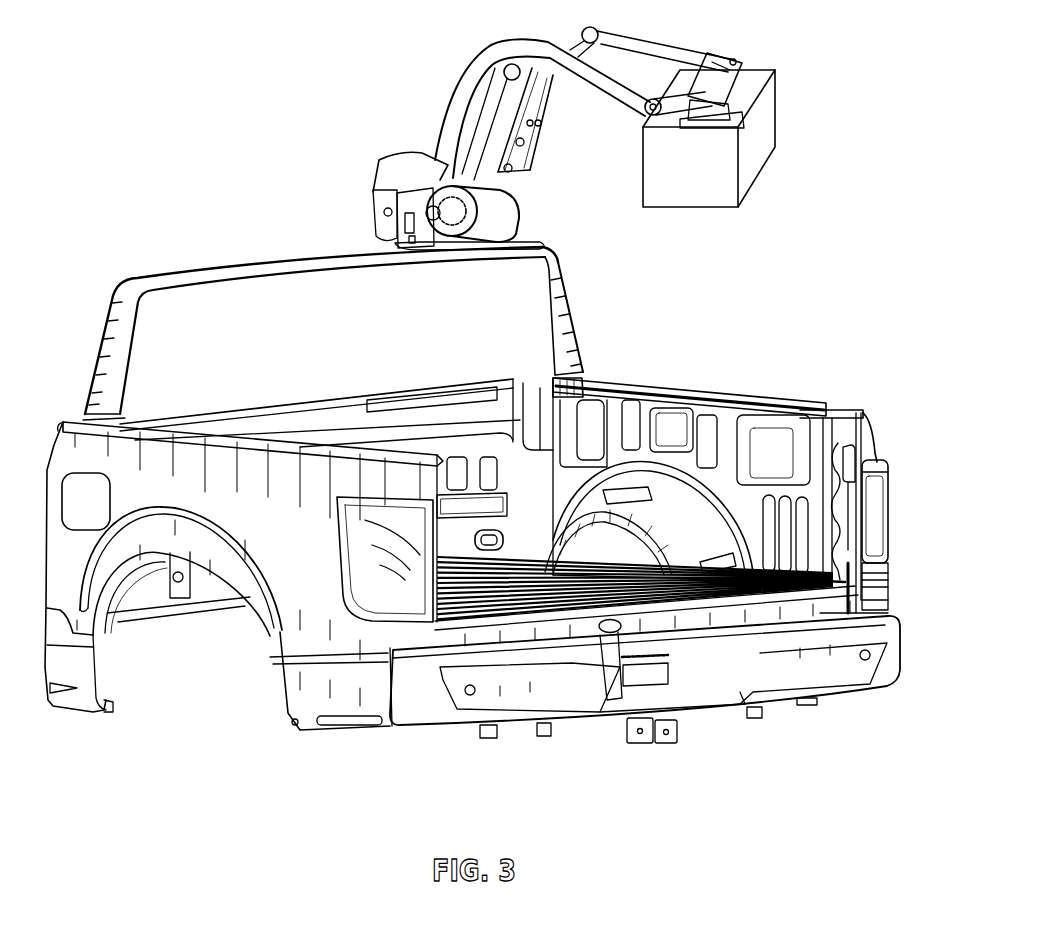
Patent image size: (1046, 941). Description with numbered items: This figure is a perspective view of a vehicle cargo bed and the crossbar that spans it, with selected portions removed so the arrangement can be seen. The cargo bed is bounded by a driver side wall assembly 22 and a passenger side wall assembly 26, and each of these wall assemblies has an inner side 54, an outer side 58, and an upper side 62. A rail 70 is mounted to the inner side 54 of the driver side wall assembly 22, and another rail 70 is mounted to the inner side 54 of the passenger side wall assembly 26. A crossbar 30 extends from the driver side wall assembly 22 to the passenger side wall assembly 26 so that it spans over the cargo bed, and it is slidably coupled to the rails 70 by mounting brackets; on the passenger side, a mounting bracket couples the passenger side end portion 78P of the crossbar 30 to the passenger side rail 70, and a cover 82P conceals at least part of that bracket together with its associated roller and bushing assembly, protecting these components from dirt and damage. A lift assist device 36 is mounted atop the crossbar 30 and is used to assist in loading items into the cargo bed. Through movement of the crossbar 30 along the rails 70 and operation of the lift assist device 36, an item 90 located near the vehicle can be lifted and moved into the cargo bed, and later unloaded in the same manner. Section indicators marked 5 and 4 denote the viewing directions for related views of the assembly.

The lift assist device 36 is at (744, 88).
The item 90 is at (706, 195).
The crossbar 30 is at (558, 263).
The passenger side end portion 78P is at (578, 316).
The cover 82P is at (583, 379).
The upper side 62 is at (143, 428).
The driver side wall assembly 22 is at (260, 431).
The passenger side wall assembly 26 is at (679, 383).
The rail 70 is at (752, 409).
The inner side 54 is at (454, 548).
The outer side 58 is at (290, 597).
The section view line 5 is at (370, 464).
The section view line 4 is at (390, 742).